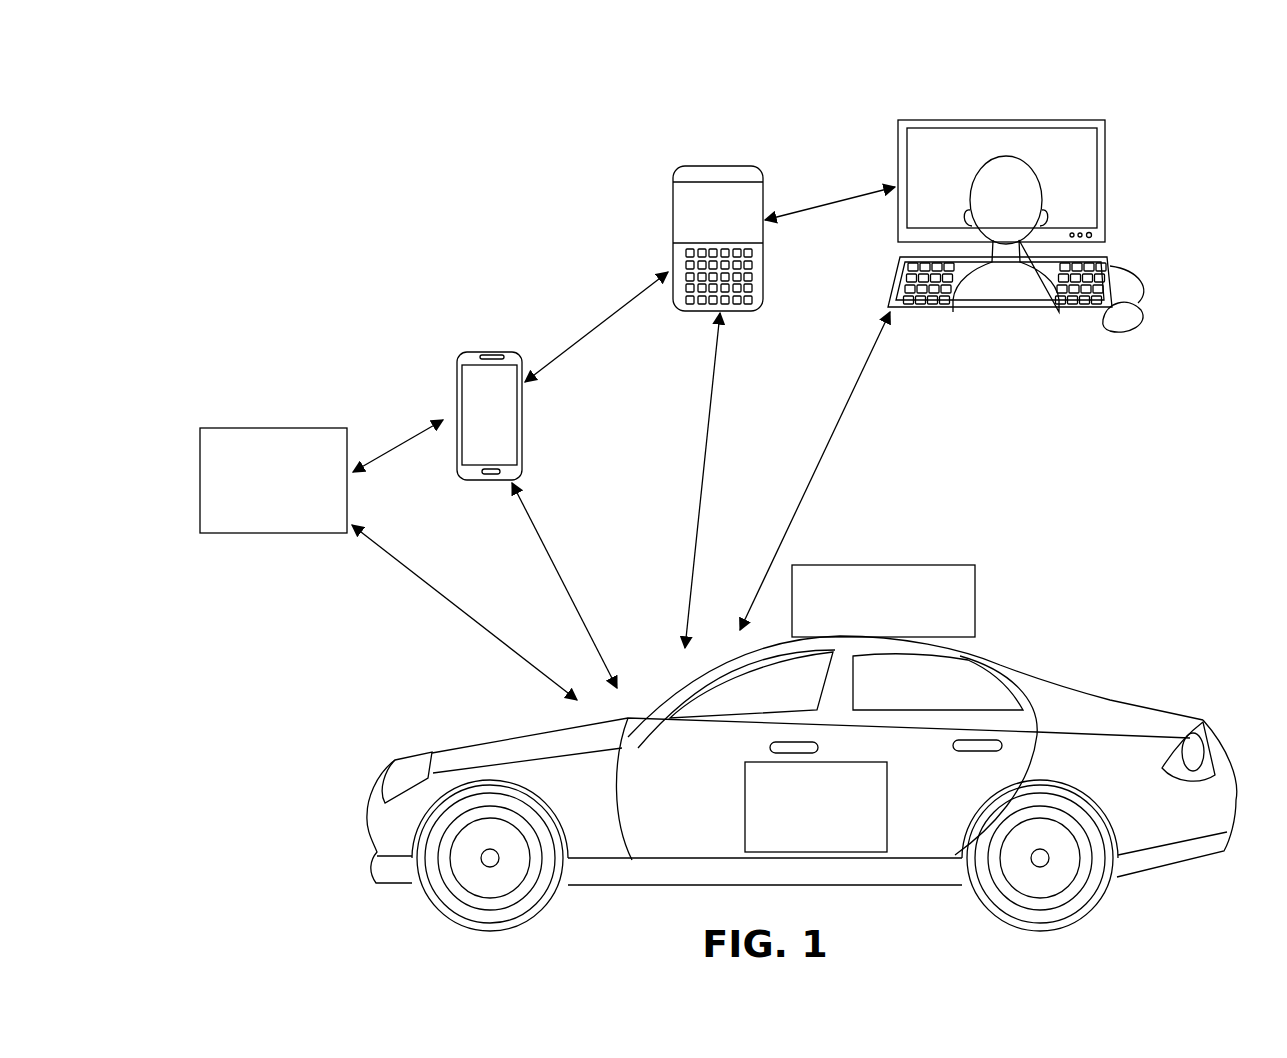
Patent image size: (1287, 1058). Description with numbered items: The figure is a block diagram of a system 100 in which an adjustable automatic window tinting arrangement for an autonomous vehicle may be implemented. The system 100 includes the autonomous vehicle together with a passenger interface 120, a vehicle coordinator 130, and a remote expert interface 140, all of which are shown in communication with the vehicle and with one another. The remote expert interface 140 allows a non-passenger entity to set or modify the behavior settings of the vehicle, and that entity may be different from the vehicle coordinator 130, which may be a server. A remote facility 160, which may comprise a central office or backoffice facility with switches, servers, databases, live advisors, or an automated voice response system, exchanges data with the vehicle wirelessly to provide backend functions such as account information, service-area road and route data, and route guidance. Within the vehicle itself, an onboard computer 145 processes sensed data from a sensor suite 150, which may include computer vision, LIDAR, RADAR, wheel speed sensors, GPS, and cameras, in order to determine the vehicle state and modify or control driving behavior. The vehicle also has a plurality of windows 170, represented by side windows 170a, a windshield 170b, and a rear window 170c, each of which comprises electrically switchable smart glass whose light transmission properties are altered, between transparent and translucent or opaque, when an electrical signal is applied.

The system 100 is at (1200, 120).
The passenger interface 120 is at (475, 350).
The vehicle coordinator 130 is at (700, 165).
The remote expert interface 140 is at (930, 120).
The onboard computer 145 is at (800, 841).
The sensor suite 150 is at (867, 625).
The remote facility 160 is at (258, 514).
The windows 170 is at (953, 668).
The side windows 170a is at (759, 696).
The windshield 170b is at (682, 678).
The rear window 170c is at (1047, 668).